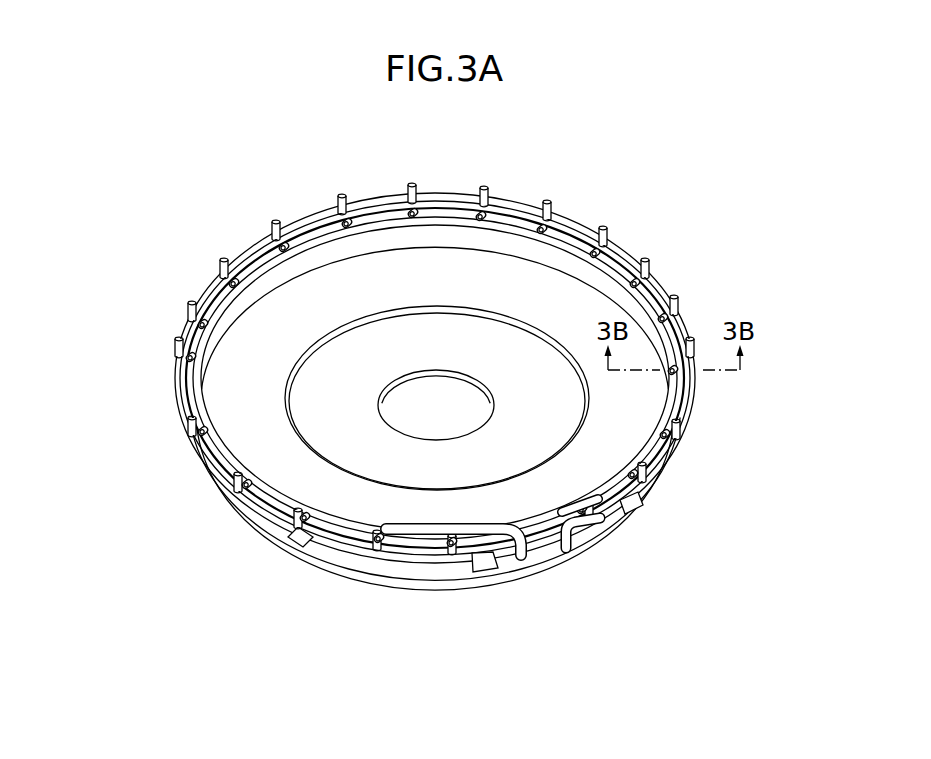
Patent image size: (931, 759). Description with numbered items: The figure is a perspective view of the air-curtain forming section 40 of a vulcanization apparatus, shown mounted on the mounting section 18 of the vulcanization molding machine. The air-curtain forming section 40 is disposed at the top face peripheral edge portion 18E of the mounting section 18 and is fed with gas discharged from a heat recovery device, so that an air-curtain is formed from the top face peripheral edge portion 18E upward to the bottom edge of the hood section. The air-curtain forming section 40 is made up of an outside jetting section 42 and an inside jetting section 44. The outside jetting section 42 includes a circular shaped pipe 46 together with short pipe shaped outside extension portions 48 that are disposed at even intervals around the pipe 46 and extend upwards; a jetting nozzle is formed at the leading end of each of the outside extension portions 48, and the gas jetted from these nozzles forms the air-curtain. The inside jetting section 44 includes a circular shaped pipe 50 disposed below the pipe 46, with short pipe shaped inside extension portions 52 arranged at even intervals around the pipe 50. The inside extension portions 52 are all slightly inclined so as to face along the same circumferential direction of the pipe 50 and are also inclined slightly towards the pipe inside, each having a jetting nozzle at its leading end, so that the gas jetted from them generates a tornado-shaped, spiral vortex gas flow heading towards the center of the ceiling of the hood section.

The mounting section 18 is at (224, 397).
The top face peripheral edge portion 18E is at (157, 331).
The air-curtain forming section 40 is at (484, 359).
The outside jetting section 42 is at (650, 229).
The inside jetting section 44 is at (592, 281).
The circular shaped pipe 46 is at (690, 400).
The outside extension portions 48 is at (273, 226).
The circular shaped pipe 50 is at (673, 385).
The inside extension portions 52 is at (307, 238).